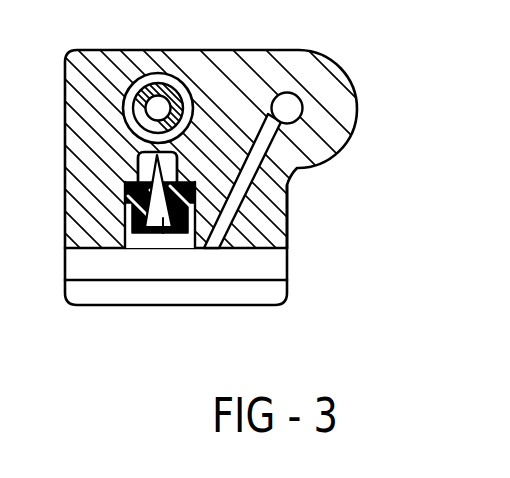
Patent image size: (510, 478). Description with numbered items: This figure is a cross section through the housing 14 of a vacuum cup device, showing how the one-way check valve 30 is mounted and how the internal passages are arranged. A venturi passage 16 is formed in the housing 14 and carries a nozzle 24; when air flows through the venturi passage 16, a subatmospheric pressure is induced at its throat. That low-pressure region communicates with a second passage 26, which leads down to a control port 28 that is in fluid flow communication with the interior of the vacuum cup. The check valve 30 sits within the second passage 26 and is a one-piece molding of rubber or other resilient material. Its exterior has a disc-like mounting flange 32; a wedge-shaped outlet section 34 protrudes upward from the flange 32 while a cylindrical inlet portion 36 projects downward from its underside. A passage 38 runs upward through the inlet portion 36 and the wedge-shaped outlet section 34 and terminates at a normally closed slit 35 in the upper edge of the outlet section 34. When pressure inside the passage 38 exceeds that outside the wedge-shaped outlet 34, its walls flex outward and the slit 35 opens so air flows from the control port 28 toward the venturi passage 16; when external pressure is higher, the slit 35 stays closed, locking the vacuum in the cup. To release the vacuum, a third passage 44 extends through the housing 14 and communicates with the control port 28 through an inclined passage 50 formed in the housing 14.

The housing 14 is at (294, 55).
The venturi passage 16 is at (139, 80).
The nozzle 24 is at (137, 103).
The second passage 26 is at (137, 150).
The control port 28 is at (127, 232).
The one-way check valve 30 is at (141, 258).
The mounting flange 32 is at (193, 190).
The wedge-shaped outlet section 34 is at (178, 166).
The slit 35 is at (127, 178).
The cylindrical inlet portion 36 is at (189, 232).
The passage 38 is at (163, 222).
The third passage 44 is at (293, 106).
The inclined passage 50 is at (247, 186).